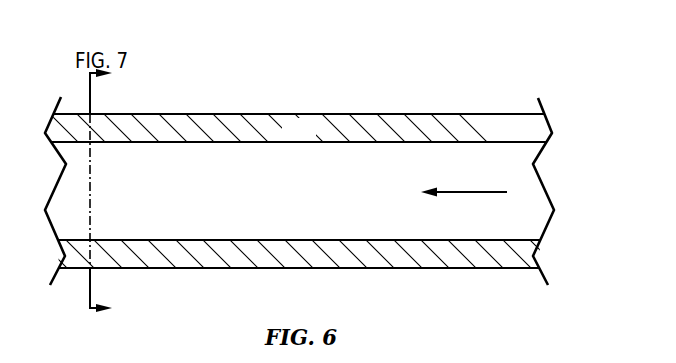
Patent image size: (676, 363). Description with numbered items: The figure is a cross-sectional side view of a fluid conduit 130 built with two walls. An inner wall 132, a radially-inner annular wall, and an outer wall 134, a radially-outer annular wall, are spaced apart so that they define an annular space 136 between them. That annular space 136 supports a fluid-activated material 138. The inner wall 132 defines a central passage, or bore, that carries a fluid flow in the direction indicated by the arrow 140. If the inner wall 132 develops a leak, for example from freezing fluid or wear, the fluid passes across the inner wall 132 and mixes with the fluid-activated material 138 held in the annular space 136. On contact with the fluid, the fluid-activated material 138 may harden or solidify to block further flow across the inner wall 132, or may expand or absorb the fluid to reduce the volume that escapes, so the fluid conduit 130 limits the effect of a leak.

The fluid conduit 130 is at (349, 66).
The inner wall 132 is at (196, 143).
The outer wall 134 is at (167, 114).
The annular space 136 is at (314, 138).
The fluid-activated material 138 is at (403, 123).
The arrow 140 is at (465, 192).